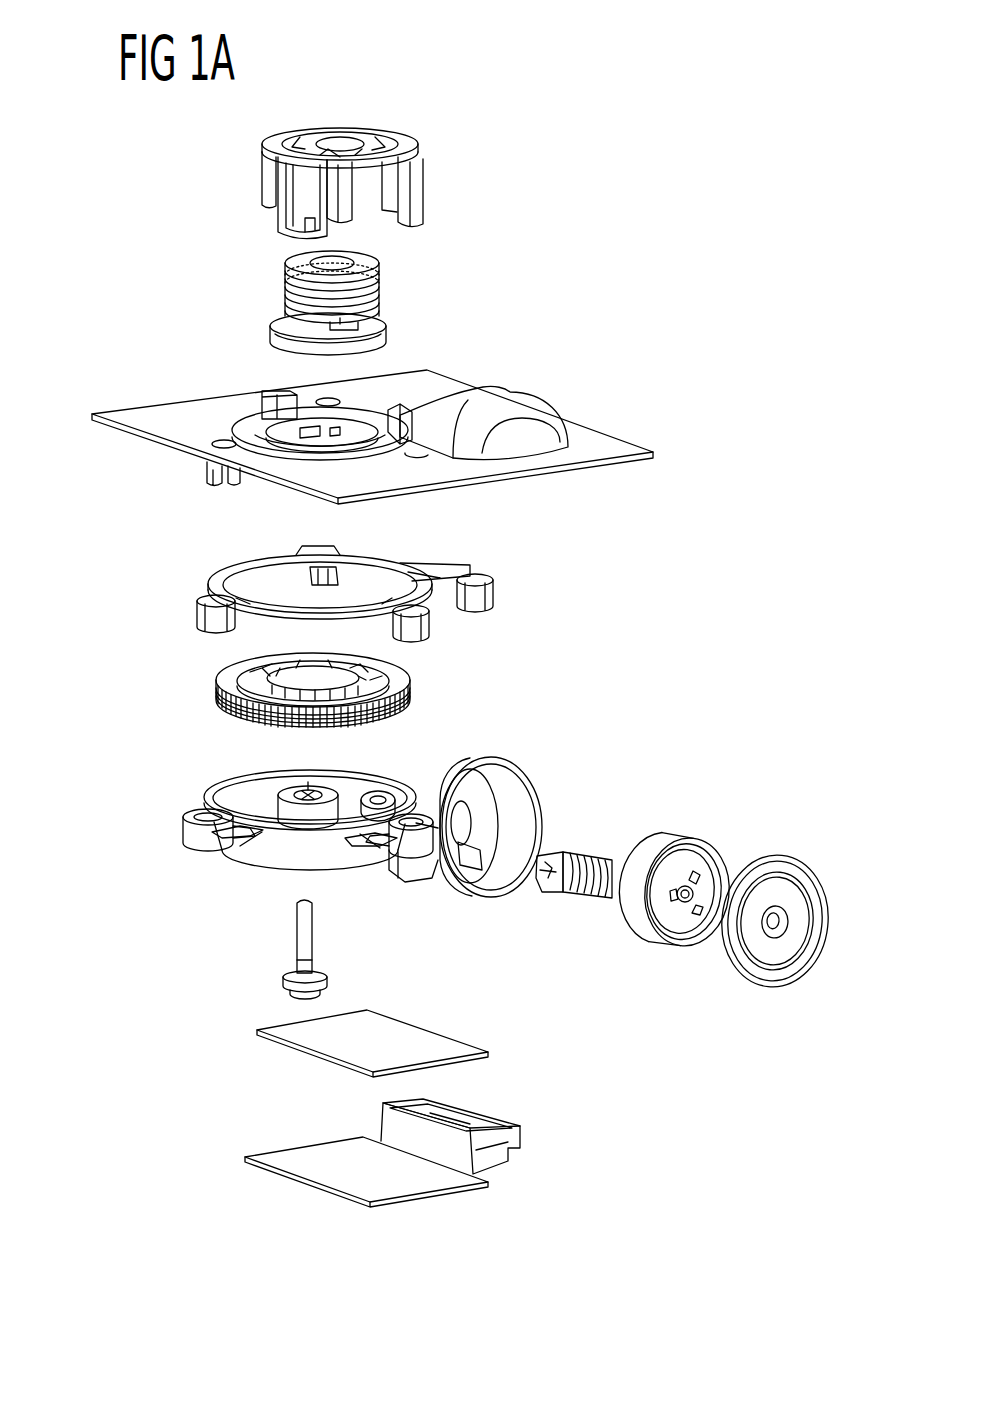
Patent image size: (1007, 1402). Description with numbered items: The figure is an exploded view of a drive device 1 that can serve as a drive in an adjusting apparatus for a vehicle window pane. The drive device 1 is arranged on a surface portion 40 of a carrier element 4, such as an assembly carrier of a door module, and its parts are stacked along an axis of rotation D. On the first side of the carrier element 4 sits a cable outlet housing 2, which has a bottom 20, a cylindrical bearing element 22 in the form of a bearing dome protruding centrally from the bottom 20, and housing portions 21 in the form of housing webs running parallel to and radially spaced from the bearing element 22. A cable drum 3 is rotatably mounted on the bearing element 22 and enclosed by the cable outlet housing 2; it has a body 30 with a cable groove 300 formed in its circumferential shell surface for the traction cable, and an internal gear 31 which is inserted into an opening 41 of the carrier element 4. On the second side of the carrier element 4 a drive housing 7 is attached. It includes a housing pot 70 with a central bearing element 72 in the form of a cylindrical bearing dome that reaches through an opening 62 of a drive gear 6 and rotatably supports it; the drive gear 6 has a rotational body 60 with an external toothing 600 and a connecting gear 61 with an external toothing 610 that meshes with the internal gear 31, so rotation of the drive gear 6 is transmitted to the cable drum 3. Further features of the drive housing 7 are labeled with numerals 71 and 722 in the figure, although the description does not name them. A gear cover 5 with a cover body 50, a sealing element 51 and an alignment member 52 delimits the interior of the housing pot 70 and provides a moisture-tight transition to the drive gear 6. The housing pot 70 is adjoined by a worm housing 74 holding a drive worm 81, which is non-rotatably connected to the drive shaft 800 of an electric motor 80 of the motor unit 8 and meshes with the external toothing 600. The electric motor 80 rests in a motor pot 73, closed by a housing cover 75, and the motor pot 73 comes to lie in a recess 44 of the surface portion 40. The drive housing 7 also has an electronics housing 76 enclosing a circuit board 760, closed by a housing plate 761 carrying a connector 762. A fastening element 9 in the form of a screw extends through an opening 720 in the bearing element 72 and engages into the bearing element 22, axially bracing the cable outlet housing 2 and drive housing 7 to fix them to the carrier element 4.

The axis of rotation D is at (338, 62).
The drive device 1 is at (617, 266).
The cable outlet housing 2 is at (440, 145).
The bottom 20 is at (378, 134).
The housing portions 21 is at (416, 212).
The bearing element 22 is at (352, 212).
The cable drum 3 is at (420, 270).
The body 30 is at (292, 261).
The cable groove 300 is at (285, 292).
The internal gear 31 is at (378, 340).
The carrier element 4 is at (619, 418).
The surface portion 40 is at (165, 430).
The opening 41 is at (398, 414).
The recess 44 is at (540, 387).
The gear cover 5 is at (522, 603).
The cover body 50 is at (365, 568).
The sealing element 51 is at (190, 630).
The alignment member 52 is at (428, 578).
The drive gear 6 is at (467, 695).
The rotational body 60 is at (215, 705).
The connecting gear 61 is at (398, 712).
The external toothing 600 is at (252, 722).
The opening 62 is at (302, 720).
The external toothing 610 is at (345, 717).
The drive housing 7 is at (215, 870).
The housing pot 70 is at (290, 840).
The carrier bushings 71 is at (405, 847).
The bearing element 72 is at (318, 812).
The opening 720 is at (295, 810).
The plate rim 722 is at (290, 780).
The motor pot 73 is at (527, 776).
The worm housing 74 is at (405, 792).
The electronics housing 76 is at (410, 875).
The motor unit 8 is at (699, 830).
The electric motor 80 is at (648, 962).
The drive shaft 800 is at (703, 880).
The drive worm 81 is at (578, 892).
The housing cover 75 is at (777, 978).
The fastening element 9 is at (300, 950).
The circuit board 760 is at (417, 1040).
The housing plate 761 is at (393, 1182).
The connector 762 is at (493, 1162).